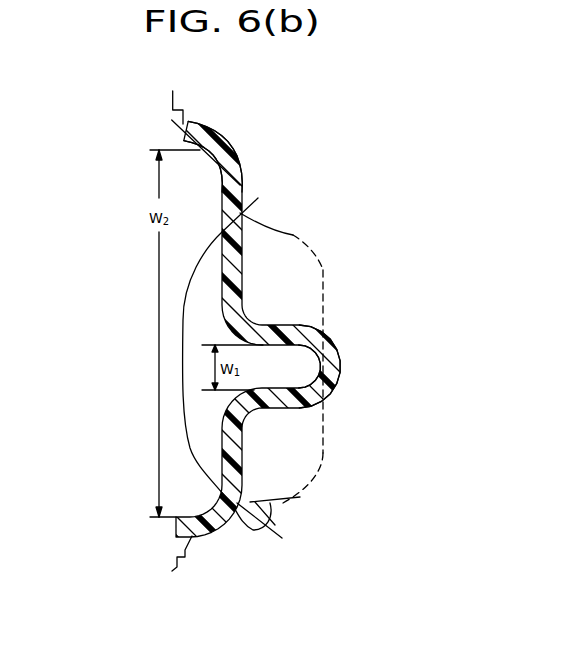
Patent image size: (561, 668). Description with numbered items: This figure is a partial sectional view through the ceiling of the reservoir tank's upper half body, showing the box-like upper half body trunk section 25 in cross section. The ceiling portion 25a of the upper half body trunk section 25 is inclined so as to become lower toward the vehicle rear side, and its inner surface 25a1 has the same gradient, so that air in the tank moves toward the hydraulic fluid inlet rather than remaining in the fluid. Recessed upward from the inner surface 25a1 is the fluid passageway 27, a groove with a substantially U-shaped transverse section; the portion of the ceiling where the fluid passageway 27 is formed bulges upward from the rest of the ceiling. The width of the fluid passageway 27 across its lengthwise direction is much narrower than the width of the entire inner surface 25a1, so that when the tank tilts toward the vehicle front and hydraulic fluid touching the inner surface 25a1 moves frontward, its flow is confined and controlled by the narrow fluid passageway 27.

The upper half body trunk section 25 is at (213, 532).
The ceiling portion 25a is at (233, 268).
The inner surface 25a1 is at (237, 150).
The fluid passageway 27 is at (294, 364).